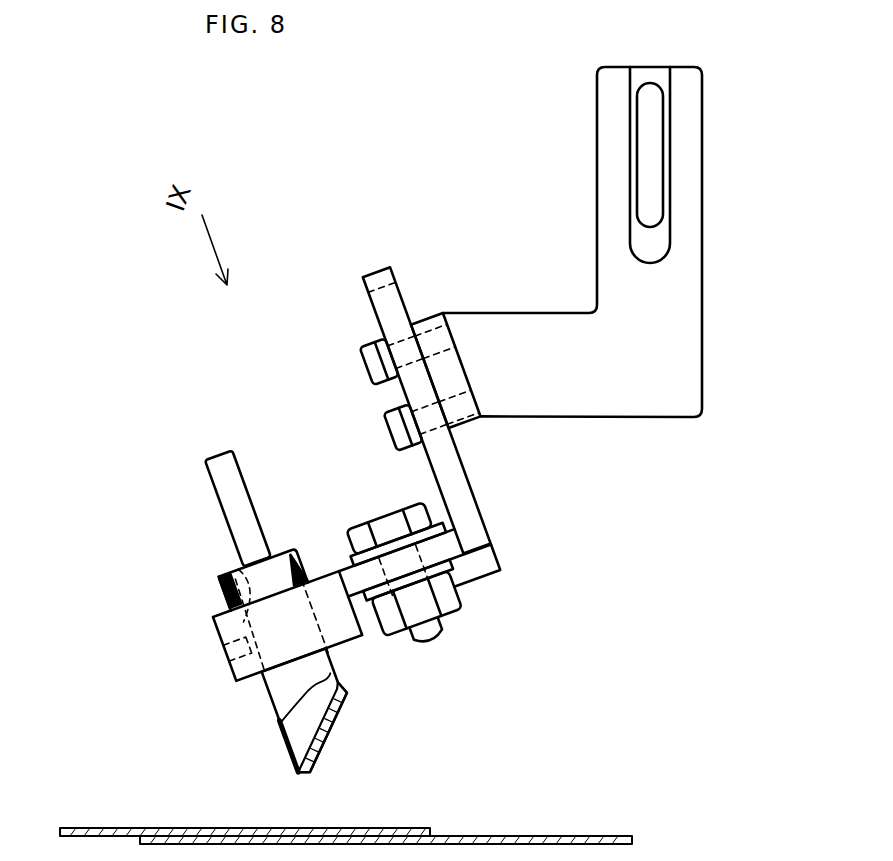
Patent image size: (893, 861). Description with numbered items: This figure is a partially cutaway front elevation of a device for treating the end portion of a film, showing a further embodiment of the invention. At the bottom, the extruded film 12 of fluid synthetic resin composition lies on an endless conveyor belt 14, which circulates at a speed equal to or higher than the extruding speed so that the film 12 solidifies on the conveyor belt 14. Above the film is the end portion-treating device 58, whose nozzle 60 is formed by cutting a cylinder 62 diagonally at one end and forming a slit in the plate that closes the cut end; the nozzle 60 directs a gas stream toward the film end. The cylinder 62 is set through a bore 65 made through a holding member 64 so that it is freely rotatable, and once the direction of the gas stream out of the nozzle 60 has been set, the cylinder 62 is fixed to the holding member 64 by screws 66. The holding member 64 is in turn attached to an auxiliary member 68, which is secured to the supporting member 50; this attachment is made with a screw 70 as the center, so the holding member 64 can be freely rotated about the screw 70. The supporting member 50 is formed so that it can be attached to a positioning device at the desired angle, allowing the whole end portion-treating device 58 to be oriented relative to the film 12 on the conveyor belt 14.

The film 12 is at (143, 828).
The endless conveyor belt 14 is at (600, 830).
The supporting member 50 is at (683, 315).
The end portion-treating device 58 is at (222, 395).
The nozzle 60 is at (322, 730).
The cylinder 62 is at (282, 690).
The holding member 64 is at (327, 592).
The bore 65 is at (240, 565).
The screws 66 is at (220, 655).
The auxiliary member 68 is at (470, 527).
The screw 70 is at (437, 648).